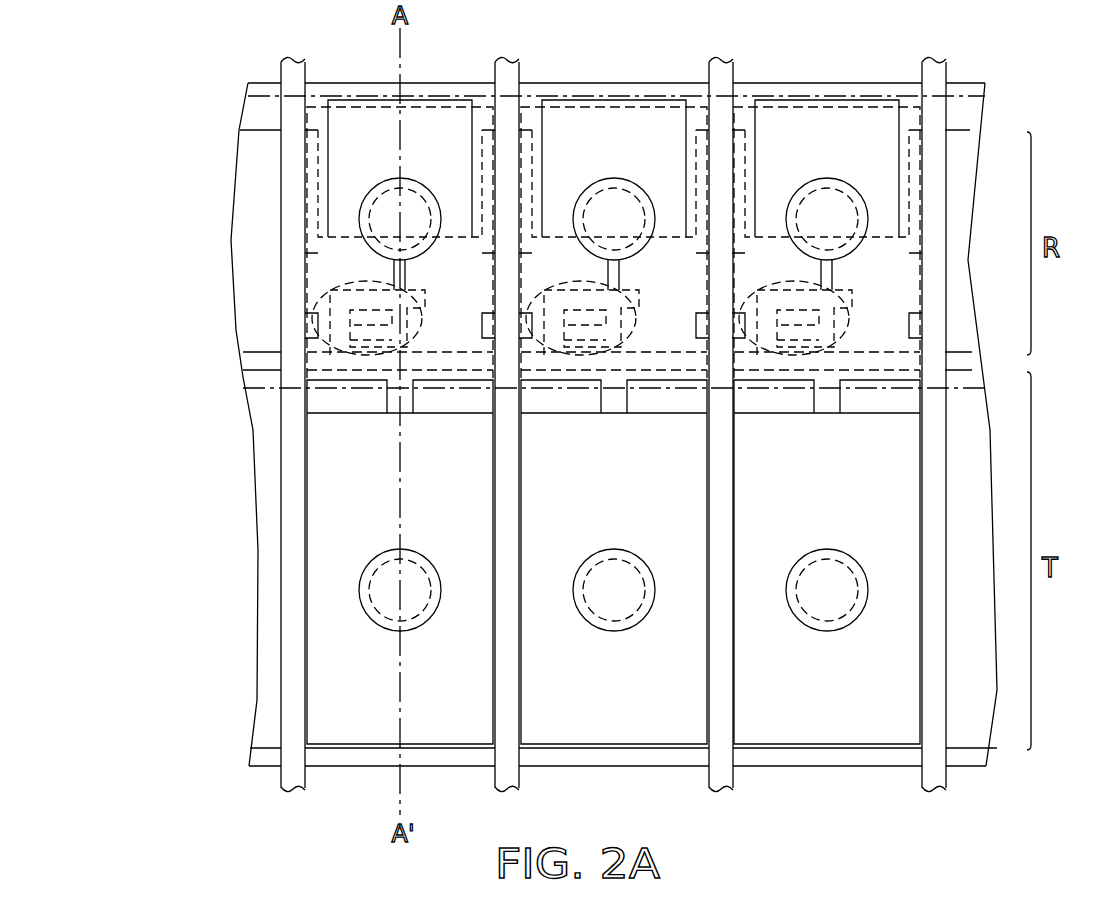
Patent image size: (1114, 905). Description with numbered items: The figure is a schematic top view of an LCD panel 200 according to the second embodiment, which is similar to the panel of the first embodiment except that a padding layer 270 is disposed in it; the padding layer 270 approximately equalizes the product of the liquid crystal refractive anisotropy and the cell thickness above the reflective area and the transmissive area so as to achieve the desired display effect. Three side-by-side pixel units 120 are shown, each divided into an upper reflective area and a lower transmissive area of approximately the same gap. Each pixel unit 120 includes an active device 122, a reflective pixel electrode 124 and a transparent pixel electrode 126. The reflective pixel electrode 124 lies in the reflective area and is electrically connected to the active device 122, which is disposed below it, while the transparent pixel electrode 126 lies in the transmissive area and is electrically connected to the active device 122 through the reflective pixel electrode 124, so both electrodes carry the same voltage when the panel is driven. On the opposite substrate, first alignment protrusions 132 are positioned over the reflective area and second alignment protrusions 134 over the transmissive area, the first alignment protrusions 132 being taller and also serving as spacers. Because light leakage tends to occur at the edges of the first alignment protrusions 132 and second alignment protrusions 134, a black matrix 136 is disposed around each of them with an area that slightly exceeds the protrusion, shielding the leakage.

The LCD panel 200 is at (1100, 834).
The padding layer 270 is at (272, 86).
The pixel unit 120 is at (176, 365).
The reflective pixel electrode 124 is at (313, 253).
The active device 122 is at (312, 316).
The transparent pixel electrode 126 is at (303, 443).
The black matrix 136 is at (360, 206).
The first alignment protrusions 132 is at (358, 226).
The second alignment protrusions 134 is at (355, 596).